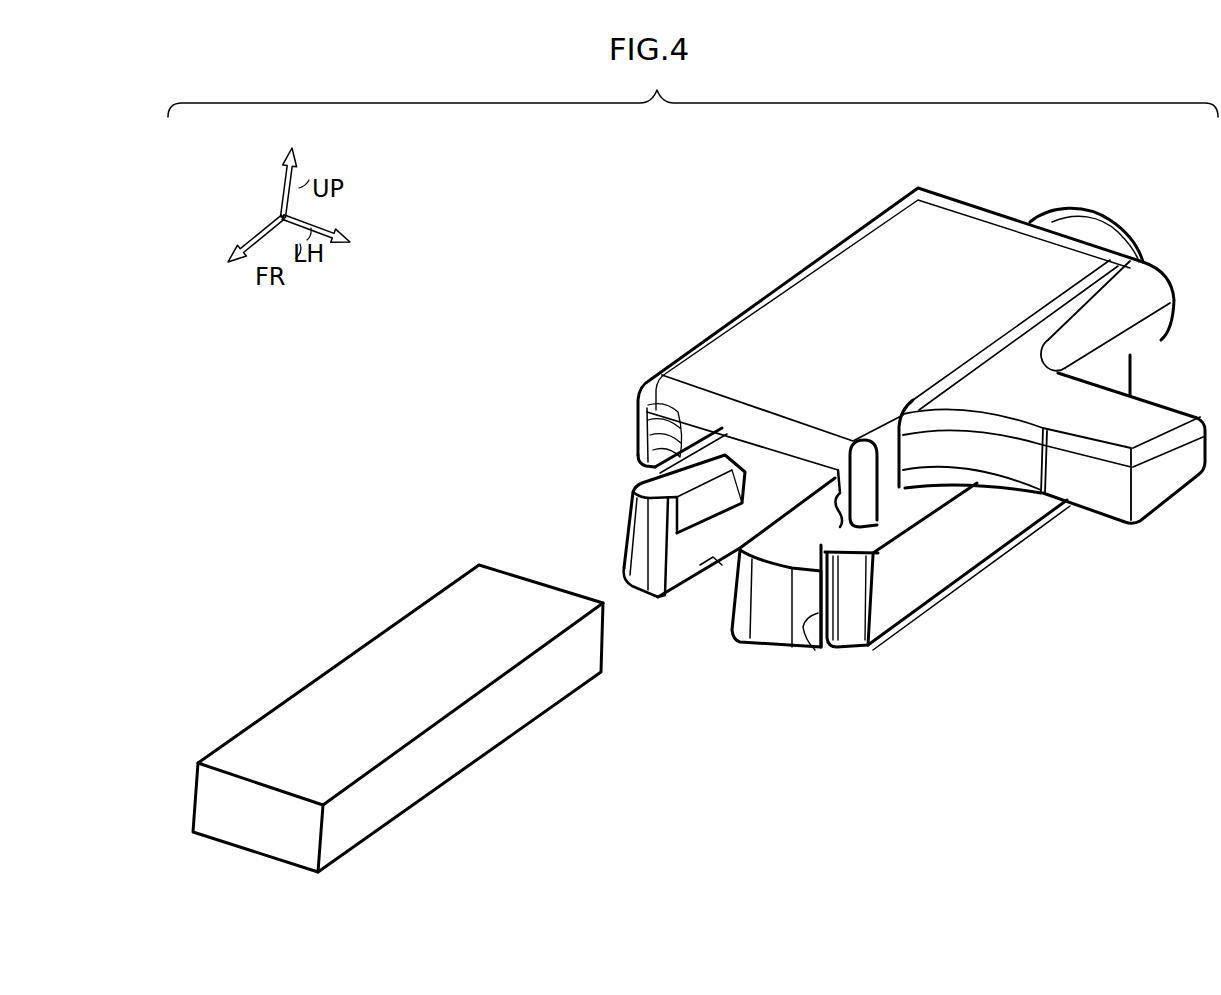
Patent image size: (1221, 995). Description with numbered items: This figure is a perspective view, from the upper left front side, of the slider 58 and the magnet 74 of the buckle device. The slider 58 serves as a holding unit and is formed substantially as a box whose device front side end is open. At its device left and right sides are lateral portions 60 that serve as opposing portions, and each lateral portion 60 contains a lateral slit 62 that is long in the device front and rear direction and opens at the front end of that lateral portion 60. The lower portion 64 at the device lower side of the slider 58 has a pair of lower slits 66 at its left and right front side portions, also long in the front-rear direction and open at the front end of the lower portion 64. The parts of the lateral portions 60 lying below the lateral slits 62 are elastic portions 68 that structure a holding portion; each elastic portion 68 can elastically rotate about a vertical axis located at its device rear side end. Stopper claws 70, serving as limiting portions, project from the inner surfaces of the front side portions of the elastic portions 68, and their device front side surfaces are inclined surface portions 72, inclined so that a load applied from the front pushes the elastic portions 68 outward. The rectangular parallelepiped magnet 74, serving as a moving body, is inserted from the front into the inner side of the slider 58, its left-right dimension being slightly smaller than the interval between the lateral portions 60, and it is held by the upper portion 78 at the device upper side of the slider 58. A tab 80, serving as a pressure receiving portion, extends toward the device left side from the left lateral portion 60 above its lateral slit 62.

The slider 58 is at (998, 181).
The lateral portion 60 is at (638, 438).
The lateral slit 62 is at (647, 470).
The lower portion 64 is at (763, 648).
The lower slit 66 is at (713, 568).
The elastic portion 68 is at (633, 512).
The stopper claw 70 is at (748, 484).
The inclined surface portion 72 is at (700, 513).
The magnet 74 is at (397, 634).
The upper portion 78 is at (773, 355).
The tab 80 is at (1143, 408).